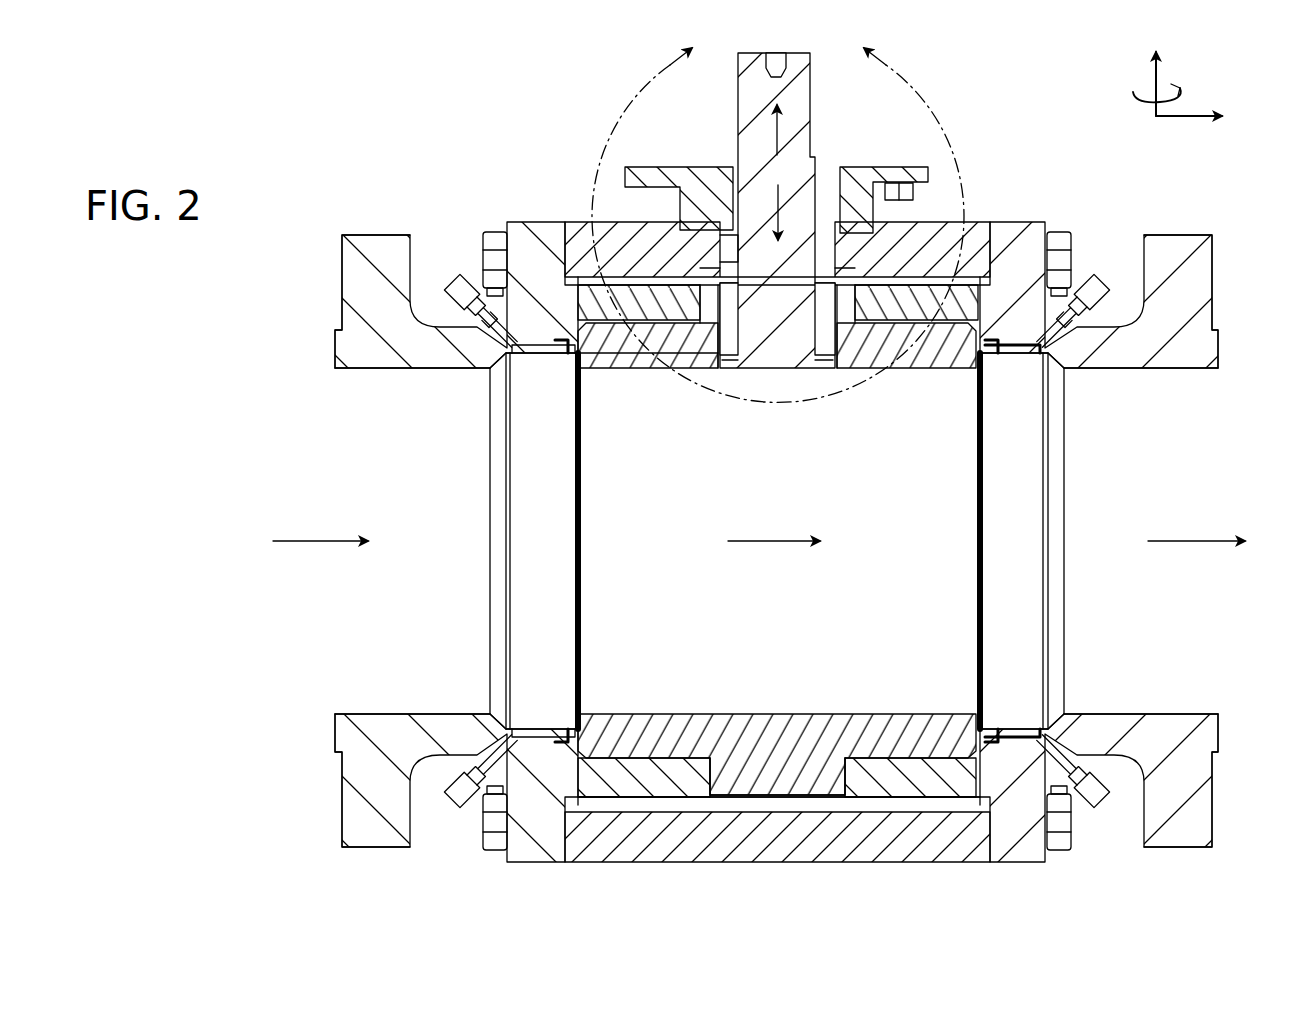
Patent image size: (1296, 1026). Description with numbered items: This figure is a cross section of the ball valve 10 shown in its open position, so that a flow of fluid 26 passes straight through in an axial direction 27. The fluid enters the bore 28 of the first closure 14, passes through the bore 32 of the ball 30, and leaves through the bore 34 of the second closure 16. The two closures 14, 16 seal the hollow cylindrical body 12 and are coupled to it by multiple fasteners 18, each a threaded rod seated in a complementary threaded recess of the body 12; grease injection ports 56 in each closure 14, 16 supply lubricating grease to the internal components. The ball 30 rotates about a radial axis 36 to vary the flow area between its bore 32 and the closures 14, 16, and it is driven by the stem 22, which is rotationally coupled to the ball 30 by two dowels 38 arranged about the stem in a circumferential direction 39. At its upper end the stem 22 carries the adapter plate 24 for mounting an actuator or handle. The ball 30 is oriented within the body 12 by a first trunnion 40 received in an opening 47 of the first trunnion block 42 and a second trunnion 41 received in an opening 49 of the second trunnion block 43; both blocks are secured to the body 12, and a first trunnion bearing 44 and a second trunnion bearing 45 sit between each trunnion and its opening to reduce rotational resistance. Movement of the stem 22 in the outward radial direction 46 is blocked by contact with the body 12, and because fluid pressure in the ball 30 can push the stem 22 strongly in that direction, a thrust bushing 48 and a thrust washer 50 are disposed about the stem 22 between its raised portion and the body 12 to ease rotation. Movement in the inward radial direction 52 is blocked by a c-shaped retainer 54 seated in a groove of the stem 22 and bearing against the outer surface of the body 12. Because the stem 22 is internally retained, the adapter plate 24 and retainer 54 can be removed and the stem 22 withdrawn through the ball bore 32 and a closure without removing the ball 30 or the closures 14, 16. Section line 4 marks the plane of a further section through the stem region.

The ball valve 10 is at (488, 122).
The body 12 is at (975, 225).
The first closure 14 is at (378, 235).
The second closure 16 is at (1195, 235).
The fasteners 18 is at (495, 230).
The stem 22 is at (808, 92).
The adapter plate 24 is at (878, 167).
The flow of fluid 26 is at (310, 528).
The axial direction 27 is at (1188, 118).
The bore of the first closure 28 is at (335, 392).
The ball 30 is at (945, 350).
The bore of the ball 32 is at (605, 390).
The bore of the second closure 34 is at (1196, 372).
The radial axis 36 is at (1152, 78).
The dowels 38 is at (738, 362).
The circumferential direction 39 is at (1140, 92).
The first trunnion 40 is at (668, 228).
The second trunnion 41 is at (740, 780).
The first trunnion block 42 is at (598, 265).
The second trunnion block 43 is at (662, 768).
The first trunnion bearing 44 is at (700, 330).
The second trunnion bearing 45 is at (866, 770).
The outward radial direction 46 is at (770, 128).
The opening 47 is at (850, 335).
The thrust bushing 48 is at (740, 275).
The opening 49 is at (830, 800).
The thrust washer 50 is at (905, 268).
The inward radial direction 52 is at (790, 240).
The retainer 54 is at (763, 195).
The grease injection ports 56 is at (480, 292).
The section line 4- 4 is at (778, 214).